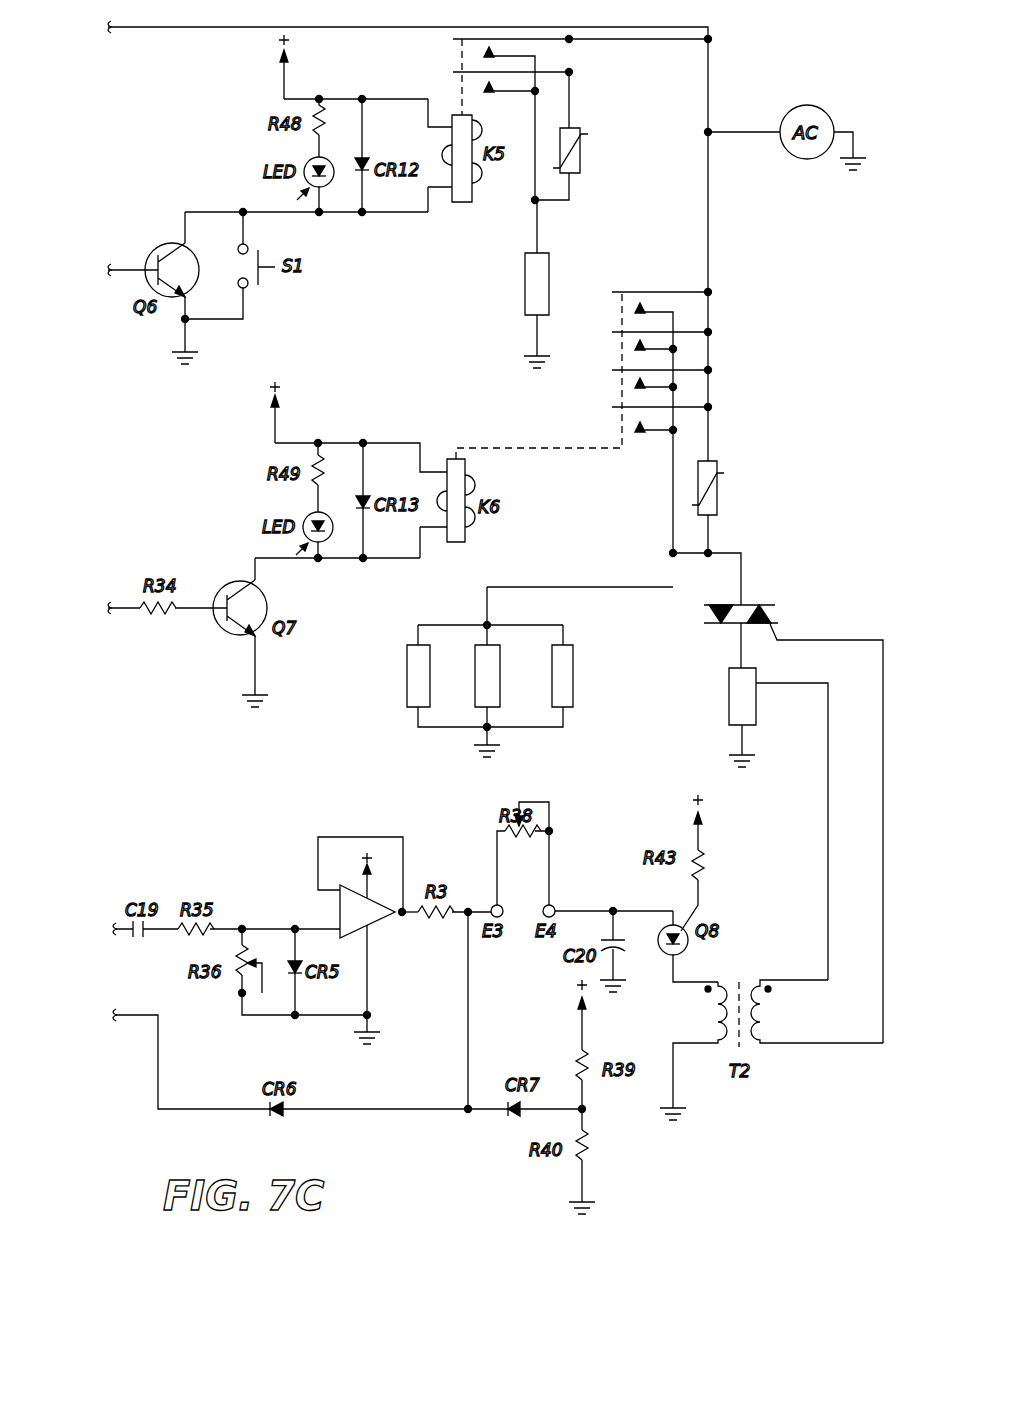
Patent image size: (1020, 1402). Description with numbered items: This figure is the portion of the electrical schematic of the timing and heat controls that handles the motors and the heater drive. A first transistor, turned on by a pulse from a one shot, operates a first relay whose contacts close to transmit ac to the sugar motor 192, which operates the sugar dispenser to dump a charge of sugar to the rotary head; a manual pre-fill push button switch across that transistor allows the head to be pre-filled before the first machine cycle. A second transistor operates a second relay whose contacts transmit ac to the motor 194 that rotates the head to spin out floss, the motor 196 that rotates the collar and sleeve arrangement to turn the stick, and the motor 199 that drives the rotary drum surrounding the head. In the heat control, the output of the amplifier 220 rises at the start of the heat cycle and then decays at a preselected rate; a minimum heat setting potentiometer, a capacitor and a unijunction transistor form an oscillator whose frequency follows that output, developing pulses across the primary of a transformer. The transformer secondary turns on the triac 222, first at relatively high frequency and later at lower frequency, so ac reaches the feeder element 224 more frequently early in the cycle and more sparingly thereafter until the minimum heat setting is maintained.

The sugar motor 192 is at (525, 275).
The motor 194 is at (407, 691).
The motor 196 is at (500, 697).
The motor 199 is at (573, 692).
The amplifier 220 is at (306, 899).
The triac 222 is at (750, 592).
The feeder element 224 is at (729, 685).